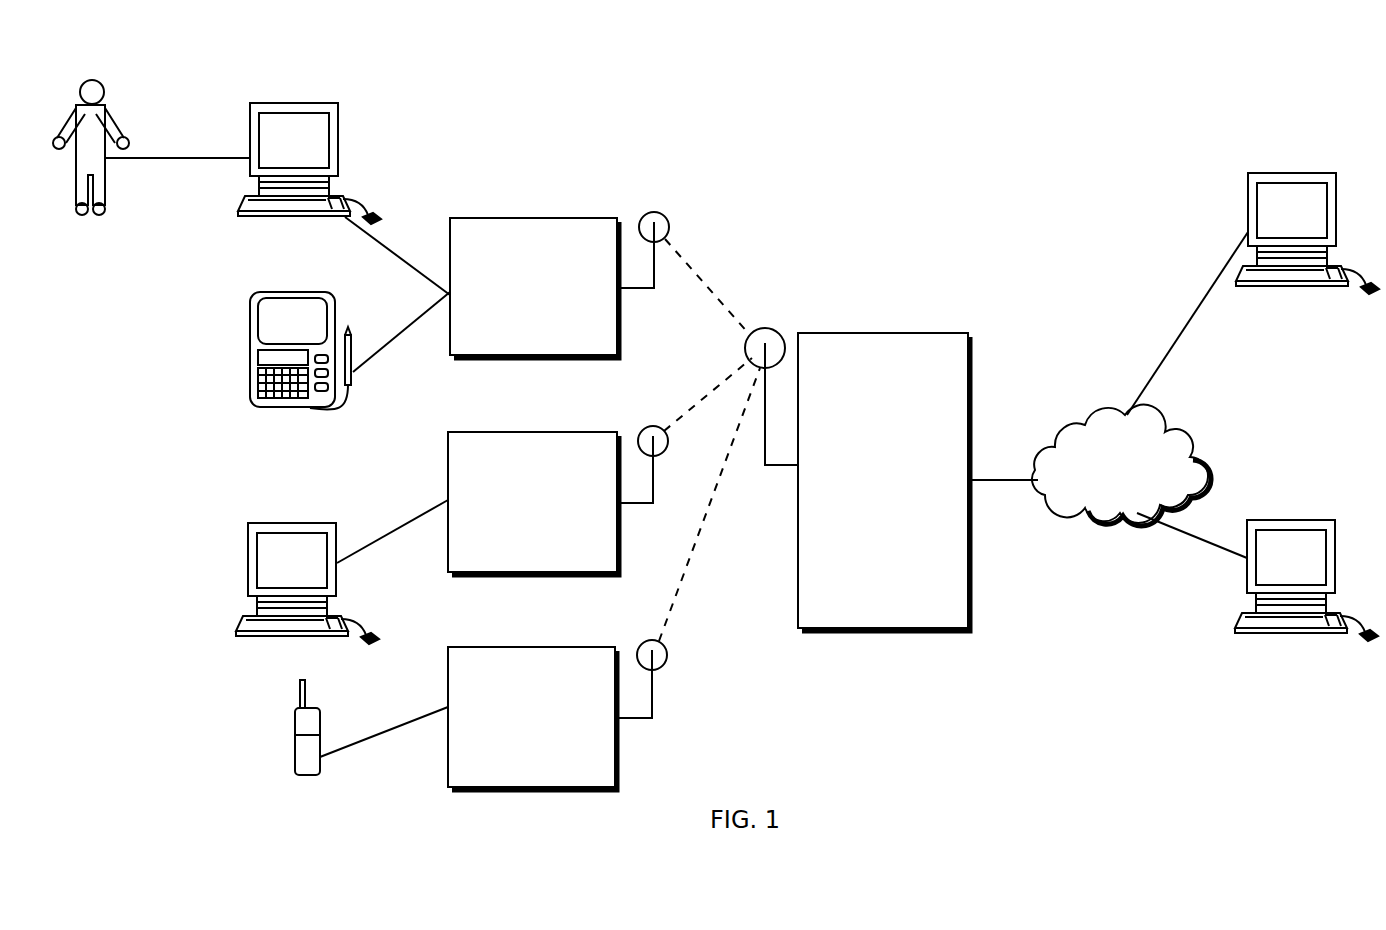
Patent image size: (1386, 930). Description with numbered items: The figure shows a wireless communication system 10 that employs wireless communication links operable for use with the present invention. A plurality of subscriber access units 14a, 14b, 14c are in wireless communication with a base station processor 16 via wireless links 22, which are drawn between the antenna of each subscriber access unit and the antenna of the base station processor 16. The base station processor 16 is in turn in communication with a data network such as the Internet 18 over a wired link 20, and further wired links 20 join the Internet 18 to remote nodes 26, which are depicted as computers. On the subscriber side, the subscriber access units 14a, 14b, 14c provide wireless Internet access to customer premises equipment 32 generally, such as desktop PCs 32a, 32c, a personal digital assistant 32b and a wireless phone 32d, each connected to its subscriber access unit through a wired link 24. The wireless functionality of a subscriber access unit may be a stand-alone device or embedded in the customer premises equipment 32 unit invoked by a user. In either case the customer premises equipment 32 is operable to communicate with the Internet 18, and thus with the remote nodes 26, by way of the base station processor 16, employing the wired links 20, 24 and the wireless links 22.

The wireless communication system 10 is at (972, 224).
The subscriber access unit 14a is at (503, 218).
The subscriber access unit 14b is at (508, 432).
The subscriber access unit 14c is at (503, 647).
The base station processor 16 is at (860, 333).
The Internet 18 is at (1197, 455).
The wired link 20 is at (990, 480).
The wireless links 22 is at (699, 272).
The wired links 24 is at (405, 260).
The remote nodes 26 is at (1287, 173).
The customer premises equipment 32 is at (110, 108).
The desktop PC 32a is at (286, 103).
The personal digital assistant 32b is at (250, 345).
The desktop PC 32c is at (248, 567).
The wireless phone 32d is at (295, 750).